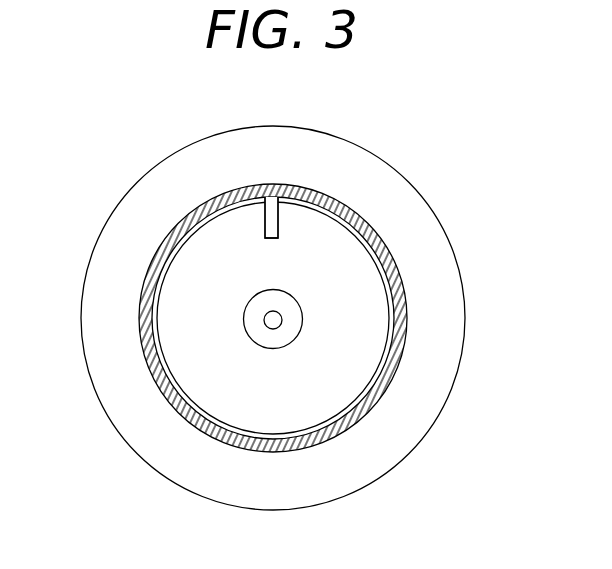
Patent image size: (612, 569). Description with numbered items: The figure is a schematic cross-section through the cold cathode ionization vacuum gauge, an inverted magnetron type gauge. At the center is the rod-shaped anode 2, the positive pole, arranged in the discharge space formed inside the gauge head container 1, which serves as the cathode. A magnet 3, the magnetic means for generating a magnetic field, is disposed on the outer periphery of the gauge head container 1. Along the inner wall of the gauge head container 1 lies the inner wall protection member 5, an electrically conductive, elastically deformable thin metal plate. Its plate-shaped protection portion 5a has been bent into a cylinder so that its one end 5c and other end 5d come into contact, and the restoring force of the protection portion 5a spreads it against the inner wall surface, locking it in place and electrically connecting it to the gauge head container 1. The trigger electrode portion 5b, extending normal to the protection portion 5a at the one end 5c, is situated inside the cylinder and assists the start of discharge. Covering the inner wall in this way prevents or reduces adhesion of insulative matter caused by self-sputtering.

The gauge head container 1 is at (352, 207).
The anode 2 is at (282, 325).
The magnet 3 is at (443, 258).
The inner wall protection member 5 is at (214, 264).
The protection portion 5a is at (163, 242).
The trigger electrode portion 5b is at (265, 223).
The one end of the protection portion 5c is at (293, 187).
The other end of the protection portion 5d is at (271, 217).